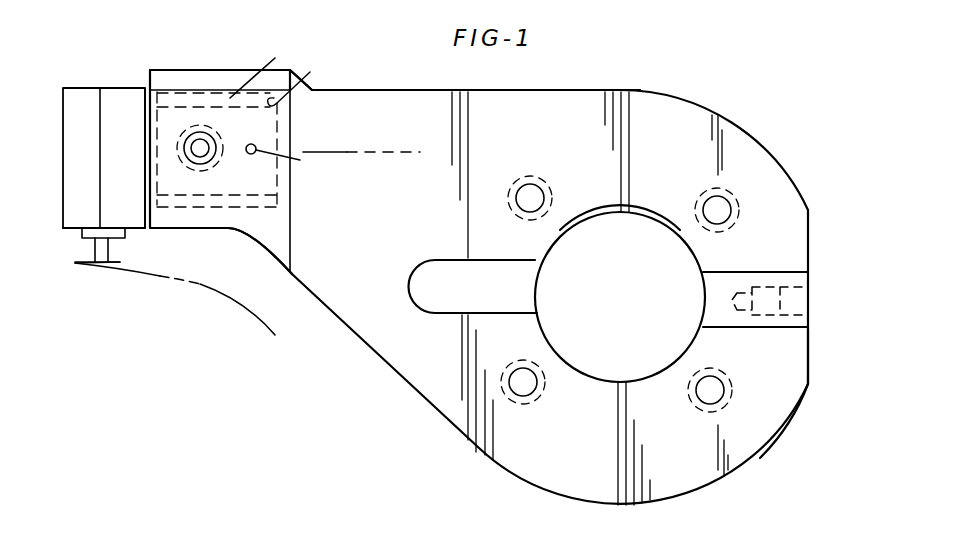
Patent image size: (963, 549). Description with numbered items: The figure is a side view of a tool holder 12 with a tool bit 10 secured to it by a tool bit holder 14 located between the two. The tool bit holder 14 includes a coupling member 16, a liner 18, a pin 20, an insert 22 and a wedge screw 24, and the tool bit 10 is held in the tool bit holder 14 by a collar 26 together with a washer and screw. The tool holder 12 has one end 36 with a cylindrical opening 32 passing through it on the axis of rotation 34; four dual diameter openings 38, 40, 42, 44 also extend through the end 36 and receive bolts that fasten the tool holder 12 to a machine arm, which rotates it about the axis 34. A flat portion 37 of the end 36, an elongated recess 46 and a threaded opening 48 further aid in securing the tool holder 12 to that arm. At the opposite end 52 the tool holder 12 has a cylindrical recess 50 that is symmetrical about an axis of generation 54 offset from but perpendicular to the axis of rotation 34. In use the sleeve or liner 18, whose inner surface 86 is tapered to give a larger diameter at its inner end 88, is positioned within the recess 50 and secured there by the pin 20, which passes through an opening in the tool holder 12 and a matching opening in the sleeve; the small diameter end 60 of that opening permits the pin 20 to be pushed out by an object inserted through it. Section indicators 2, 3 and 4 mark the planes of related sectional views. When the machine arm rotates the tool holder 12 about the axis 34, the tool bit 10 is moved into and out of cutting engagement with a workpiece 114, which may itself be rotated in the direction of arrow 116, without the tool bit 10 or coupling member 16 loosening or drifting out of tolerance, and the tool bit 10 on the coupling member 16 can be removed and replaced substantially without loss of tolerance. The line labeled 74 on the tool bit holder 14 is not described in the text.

The tool bit 10 is at (92, 262).
The tool holder 12 is at (100, 78).
The tool bit holder 14 is at (63, 111).
The coupling member 16 is at (63, 210).
The liner 18 is at (255, 212).
The pin 20 is at (300, 160).
The insert 22 is at (210, 162).
The wedge screw 24 is at (200, 139).
The collar 26 is at (126, 236).
The cylindrical opening 32 is at (588, 214).
The axis of rotation 34 is at (618, 298).
The one end 36 is at (784, 432).
The flat portion 37 is at (810, 374).
The opening 38 is at (517, 206).
The opening 40 is at (703, 218).
The opening 42 is at (511, 376).
The opening 44 is at (698, 396).
The elongated recess 46 is at (428, 262).
The threaded opening 48 is at (778, 307).
The recess 50 is at (275, 58).
The end 52 is at (174, 70).
The axis of generation 54 is at (400, 152).
The small diameter end 60 is at (254, 146).
The partition 74 is at (63, 162).
The inner surface 86 is at (312, 72).
The inner end 88 is at (272, 207).
The workpiece 114 is at (246, 320).
The arrow 116 is at (215, 341).
The section line 2 is at (623, 18).
The section line 3 is at (850, 305).
The section line 4 is at (202, 45).